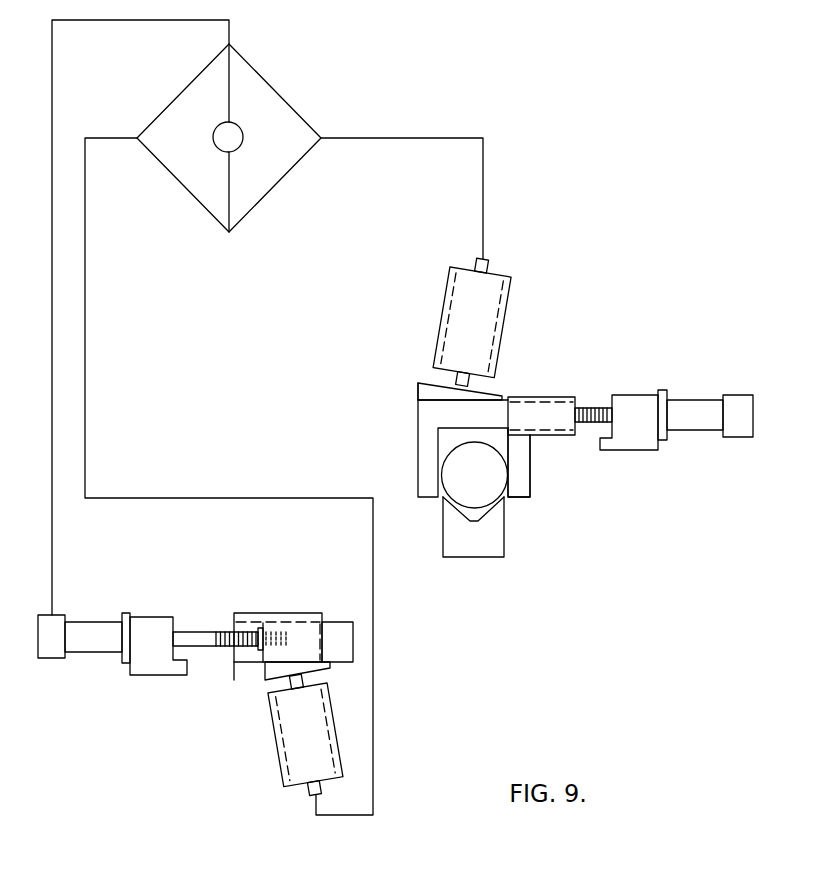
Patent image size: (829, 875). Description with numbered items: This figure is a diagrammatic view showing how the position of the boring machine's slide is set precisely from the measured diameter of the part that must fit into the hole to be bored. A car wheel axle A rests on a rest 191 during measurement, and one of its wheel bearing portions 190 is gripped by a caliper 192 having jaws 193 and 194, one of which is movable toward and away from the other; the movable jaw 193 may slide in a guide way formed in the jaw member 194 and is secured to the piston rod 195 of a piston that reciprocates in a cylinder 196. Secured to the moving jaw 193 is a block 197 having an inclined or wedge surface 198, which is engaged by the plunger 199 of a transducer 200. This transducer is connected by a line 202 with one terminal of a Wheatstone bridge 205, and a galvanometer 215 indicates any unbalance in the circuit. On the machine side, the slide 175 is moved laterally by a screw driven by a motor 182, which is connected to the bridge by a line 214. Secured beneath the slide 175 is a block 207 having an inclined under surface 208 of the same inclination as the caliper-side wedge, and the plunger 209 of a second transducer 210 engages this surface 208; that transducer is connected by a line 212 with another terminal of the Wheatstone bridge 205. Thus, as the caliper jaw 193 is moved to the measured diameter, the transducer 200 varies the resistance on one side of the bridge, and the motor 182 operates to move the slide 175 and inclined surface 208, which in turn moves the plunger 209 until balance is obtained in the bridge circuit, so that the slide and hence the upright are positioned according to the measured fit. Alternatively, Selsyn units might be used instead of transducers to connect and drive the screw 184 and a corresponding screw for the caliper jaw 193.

The slide 175 is at (351, 628).
The motor 182 is at (84, 620).
The screw 184 is at (192, 632).
The wheel bearing portion 190 is at (500, 498).
The rest 191 is at (493, 552).
The caliper 192 is at (585, 475).
The jaw 193 is at (418, 458).
The jaw 194 is at (530, 466).
The piston rod 195 is at (592, 404).
The cylinder 196 is at (712, 398).
The block 197 is at (418, 388).
The inclined surface 198 is at (432, 384).
The plunger 199 is at (471, 384).
The transducer 200 is at (505, 330).
The line 202 is at (483, 211).
The Wheatstone bridge 205 is at (283, 100).
The block 207 is at (268, 666).
The inclined under surface 208 is at (318, 675).
The plunger 209 is at (298, 680).
The transducer 210 is at (275, 732).
The line 212 is at (235, 497).
The line 214 is at (52, 538).
The galvanometer 215 is at (240, 147).
The car wheel axle A is at (458, 500).